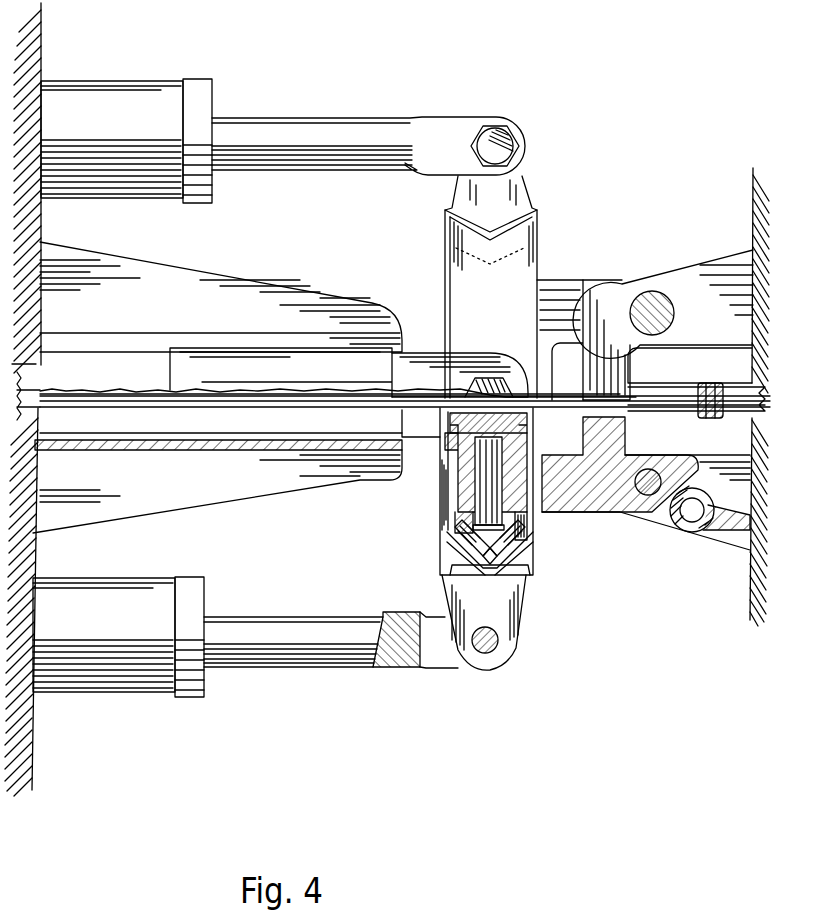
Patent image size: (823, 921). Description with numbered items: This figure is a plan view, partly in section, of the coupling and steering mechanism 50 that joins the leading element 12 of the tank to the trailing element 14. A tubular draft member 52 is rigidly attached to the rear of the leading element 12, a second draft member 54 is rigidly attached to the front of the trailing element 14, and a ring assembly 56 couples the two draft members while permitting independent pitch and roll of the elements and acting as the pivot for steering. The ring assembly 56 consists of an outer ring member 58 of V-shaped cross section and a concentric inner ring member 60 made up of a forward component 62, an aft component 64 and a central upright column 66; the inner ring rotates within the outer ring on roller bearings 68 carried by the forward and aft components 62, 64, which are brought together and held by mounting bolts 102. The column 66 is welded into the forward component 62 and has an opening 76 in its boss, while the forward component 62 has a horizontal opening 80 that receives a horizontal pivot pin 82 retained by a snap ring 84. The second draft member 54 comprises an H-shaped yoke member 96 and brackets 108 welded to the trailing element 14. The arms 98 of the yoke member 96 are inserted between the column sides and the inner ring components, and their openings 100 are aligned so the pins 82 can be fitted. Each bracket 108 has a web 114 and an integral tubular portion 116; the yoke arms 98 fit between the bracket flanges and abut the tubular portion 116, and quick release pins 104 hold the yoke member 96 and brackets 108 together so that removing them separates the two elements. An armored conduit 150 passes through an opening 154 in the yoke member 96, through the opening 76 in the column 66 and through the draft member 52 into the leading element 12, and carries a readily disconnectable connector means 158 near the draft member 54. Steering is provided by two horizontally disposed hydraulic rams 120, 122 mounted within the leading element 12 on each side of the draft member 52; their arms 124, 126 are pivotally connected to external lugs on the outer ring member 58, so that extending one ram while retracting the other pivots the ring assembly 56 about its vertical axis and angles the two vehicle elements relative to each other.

The leading element 12 is at (42, 42).
The trailing element 14 is at (750, 600).
The coupling and steering mechanism 50 is at (610, 137).
The tubular draft member 52 is at (214, 431).
The second draft member 54 is at (710, 243).
The ring assembly 56 is at (553, 218).
The outer ring member 58 is at (525, 585).
The inner ring member 60 is at (538, 548).
The forward component 62 is at (439, 544).
The aft component 64 is at (530, 560).
The central upright column 66 is at (447, 445).
The roller bearings 68 is at (478, 566).
The opening 76 is at (540, 410).
The horizontal opening 80 is at (455, 548).
The horizontal pivot pins 82 is at (460, 481).
The retaining snap rings 84 is at (458, 530).
The H-shaped yoke member 96 is at (610, 275).
The arms 98 is at (563, 280).
The openings 100 is at (465, 500).
The mounting bolts 102 is at (532, 520).
The quick release pins 104 is at (648, 497).
The brackets 108 is at (668, 280).
The web 114 is at (718, 535).
The tubular portion 116 is at (695, 530).
The hydraulic ram 120 is at (135, 705).
The hydraulic ram 122 is at (137, 76).
The arm 124 is at (300, 663).
The arm 126 is at (292, 118).
The conduit 150 is at (678, 382).
The opening 154 is at (640, 405).
The connector means 158 is at (710, 383).